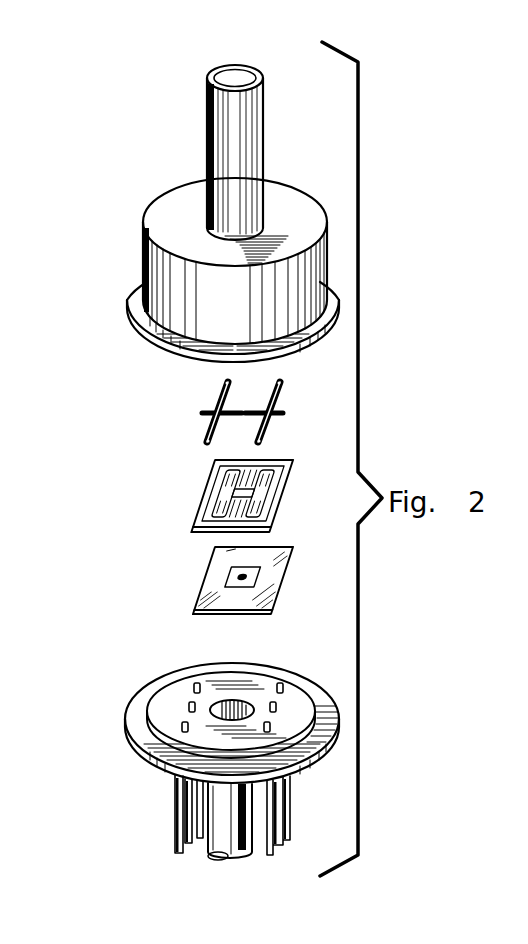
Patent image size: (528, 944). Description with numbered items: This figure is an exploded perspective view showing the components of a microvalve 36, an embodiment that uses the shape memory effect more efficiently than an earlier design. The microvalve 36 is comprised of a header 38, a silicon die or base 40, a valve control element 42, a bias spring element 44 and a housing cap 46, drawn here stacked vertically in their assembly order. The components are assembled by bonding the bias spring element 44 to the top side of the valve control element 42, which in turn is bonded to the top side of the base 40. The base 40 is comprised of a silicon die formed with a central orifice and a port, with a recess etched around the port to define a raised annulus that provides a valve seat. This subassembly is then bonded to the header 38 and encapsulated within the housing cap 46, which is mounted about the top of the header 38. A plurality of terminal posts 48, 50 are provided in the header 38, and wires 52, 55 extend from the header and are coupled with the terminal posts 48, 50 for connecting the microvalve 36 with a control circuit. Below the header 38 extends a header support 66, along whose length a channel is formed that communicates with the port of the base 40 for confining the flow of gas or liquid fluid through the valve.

The microvalve 36 is at (160, 192).
The housing cap 46 is at (142, 248).
The bias spring element 44 is at (223, 390).
The valve control element 42 is at (201, 489).
The silicon die or base 40 is at (201, 568).
The header 38 is at (133, 757).
The terminal post 48 is at (195, 683).
The terminal post 50 is at (282, 683).
The wire 52 is at (174, 808).
The header support 66 is at (208, 852).
The wire 55 is at (270, 856).